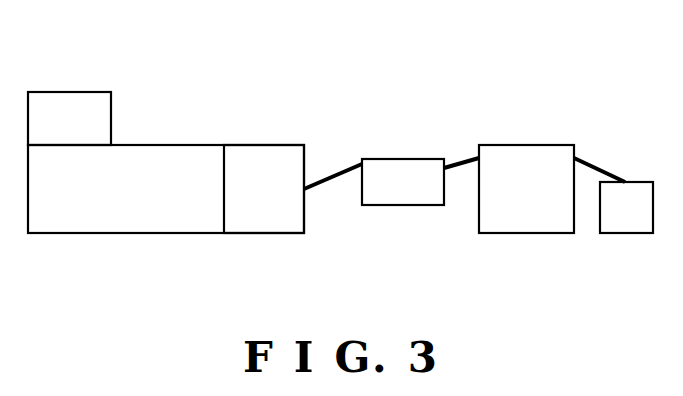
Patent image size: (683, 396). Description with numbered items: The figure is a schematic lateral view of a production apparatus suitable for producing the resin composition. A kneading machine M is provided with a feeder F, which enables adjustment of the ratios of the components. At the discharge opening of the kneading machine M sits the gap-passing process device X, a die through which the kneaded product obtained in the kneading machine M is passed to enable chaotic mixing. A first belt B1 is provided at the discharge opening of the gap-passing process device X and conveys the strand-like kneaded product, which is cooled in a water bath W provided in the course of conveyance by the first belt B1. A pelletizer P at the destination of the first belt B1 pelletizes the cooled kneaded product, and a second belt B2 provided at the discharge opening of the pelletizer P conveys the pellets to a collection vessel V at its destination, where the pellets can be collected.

The feeder F is at (65, 105).
The kneading machine M is at (170, 155).
The gap-passing process device X is at (262, 155).
The first belt B1 is at (333, 170).
The water bath W is at (402, 168).
The pelletizer P is at (525, 157).
The second belt B2 is at (602, 168).
The collection vessel V is at (638, 188).